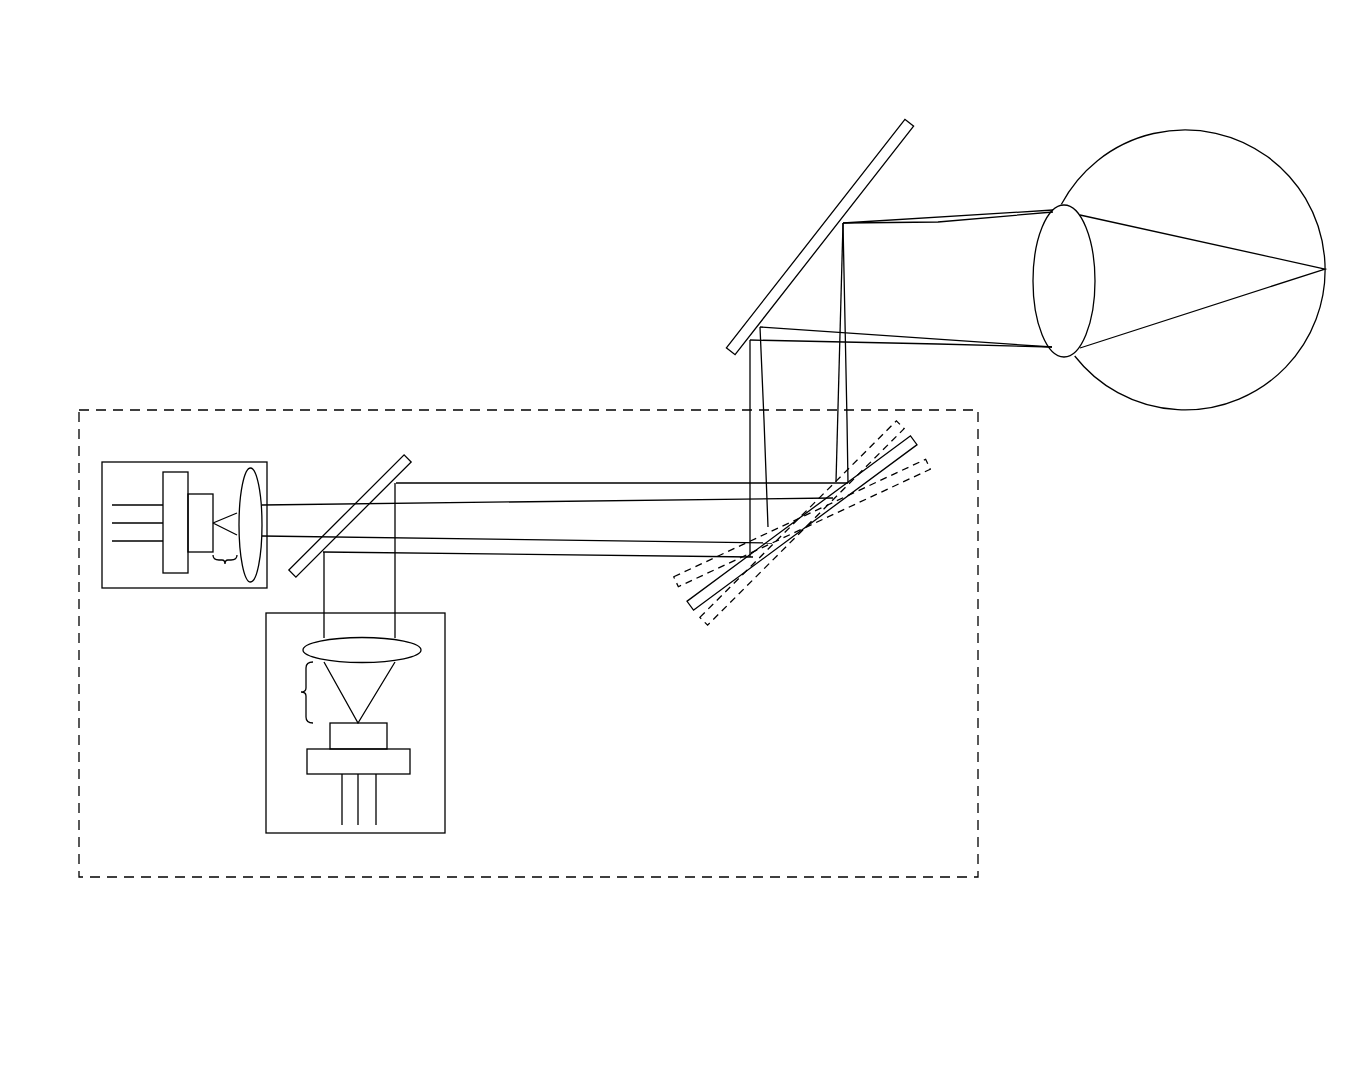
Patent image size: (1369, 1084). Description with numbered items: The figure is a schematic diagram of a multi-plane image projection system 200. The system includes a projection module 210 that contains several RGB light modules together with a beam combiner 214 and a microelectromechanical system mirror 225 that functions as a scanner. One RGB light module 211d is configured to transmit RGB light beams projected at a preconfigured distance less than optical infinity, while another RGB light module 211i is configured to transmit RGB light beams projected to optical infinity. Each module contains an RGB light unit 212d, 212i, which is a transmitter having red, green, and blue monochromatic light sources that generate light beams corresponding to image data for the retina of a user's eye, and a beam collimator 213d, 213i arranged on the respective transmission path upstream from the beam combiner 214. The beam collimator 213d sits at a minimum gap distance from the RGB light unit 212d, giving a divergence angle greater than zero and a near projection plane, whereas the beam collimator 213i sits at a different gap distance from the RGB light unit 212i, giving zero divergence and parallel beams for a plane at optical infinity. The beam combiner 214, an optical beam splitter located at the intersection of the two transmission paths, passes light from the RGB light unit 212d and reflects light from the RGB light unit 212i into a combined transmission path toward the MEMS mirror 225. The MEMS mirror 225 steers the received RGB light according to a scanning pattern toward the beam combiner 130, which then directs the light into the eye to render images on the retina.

The multi-plane image projection system 200 is at (184, 82).
The beam combiner 130 is at (872, 155).
The projection module 210 is at (505, 410).
The RGB light module 211d is at (127, 462).
The RGB light unit 212d is at (175, 487).
The beam collimator 213d is at (250, 487).
The beam combiner 214 is at (381, 466).
The RGB light module 211i is at (445, 722).
The RGB light unit 212i is at (402, 762).
The beam collimator 213i is at (412, 650).
The MEMS mirror 225 is at (700, 605).